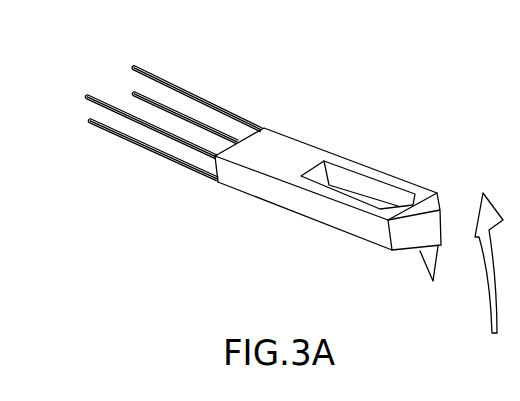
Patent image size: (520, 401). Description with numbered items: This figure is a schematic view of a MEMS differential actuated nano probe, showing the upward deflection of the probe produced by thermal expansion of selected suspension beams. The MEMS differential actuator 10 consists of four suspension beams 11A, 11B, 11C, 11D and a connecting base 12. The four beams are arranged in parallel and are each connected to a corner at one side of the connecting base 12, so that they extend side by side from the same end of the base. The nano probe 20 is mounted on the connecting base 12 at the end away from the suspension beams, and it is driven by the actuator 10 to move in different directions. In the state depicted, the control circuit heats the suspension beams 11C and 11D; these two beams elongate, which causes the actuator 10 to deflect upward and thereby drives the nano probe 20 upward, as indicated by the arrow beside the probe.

The MEMS differential actuator 10 is at (343, 121).
The suspension beam 11A is at (88, 96).
The suspension beam 11B is at (157, 78).
The suspension beam 11C is at (91, 121).
The suspension beam 11D is at (135, 94).
The connecting base 12 is at (290, 144).
The nano probe 20 is at (425, 268).